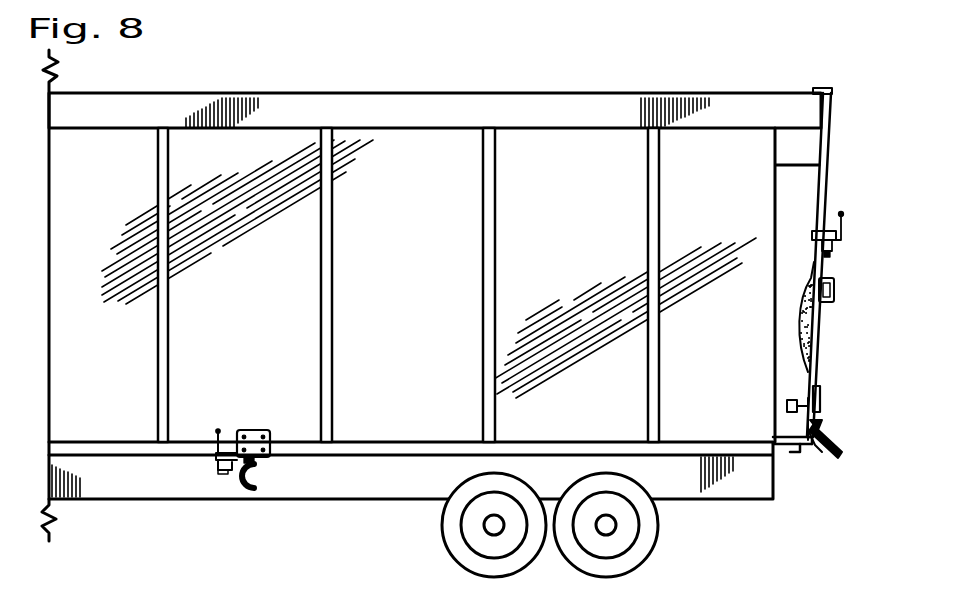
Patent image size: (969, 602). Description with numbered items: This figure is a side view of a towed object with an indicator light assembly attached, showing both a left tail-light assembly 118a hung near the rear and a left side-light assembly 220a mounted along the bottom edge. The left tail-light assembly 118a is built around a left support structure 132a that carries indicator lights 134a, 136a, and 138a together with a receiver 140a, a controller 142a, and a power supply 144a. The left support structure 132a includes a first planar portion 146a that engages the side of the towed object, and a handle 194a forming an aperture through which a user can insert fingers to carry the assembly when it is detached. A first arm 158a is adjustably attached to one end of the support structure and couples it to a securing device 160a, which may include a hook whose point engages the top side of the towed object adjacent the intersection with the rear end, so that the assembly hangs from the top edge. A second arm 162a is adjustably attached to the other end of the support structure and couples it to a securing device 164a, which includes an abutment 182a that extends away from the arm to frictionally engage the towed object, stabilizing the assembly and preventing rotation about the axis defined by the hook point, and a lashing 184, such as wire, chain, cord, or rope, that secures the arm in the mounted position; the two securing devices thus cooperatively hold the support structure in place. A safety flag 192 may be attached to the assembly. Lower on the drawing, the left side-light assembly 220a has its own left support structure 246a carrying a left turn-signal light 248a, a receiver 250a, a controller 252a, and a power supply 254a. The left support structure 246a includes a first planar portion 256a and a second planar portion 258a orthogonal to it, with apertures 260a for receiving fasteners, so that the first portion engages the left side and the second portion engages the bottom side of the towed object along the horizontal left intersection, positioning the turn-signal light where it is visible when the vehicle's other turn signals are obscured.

The left tail-light assembly 118a is at (815, 292).
The left support structure 132a is at (814, 225).
The indicator light 134a is at (787, 406).
The indicator light 136a is at (822, 400).
The indicator light 138a is at (860, 297).
The receiver 140a is at (862, 205).
The controller 142a is at (835, 243).
The power supply 144a is at (832, 255).
The first planar portion 146a is at (808, 395).
The first arm 158a is at (838, 146).
The securing device 160a is at (820, 80).
The second arm 162a is at (842, 428).
The securing device 164a is at (826, 462).
The abutment 182a is at (790, 446).
The lashing 184 is at (799, 448).
The safety flag 192 is at (841, 449).
The handle 194a is at (828, 303).
The left side-light assembly 220a is at (243, 460).
The left support structure 246a is at (319, 425).
The left turn-signal light 248a is at (249, 482).
The receiver 250a is at (218, 429).
The controller 252a is at (218, 466).
The power supply 254a is at (216, 472).
The first planar portion 256a is at (271, 439).
The second planar portion 258a is at (256, 464).
The apertures 260a is at (271, 452).